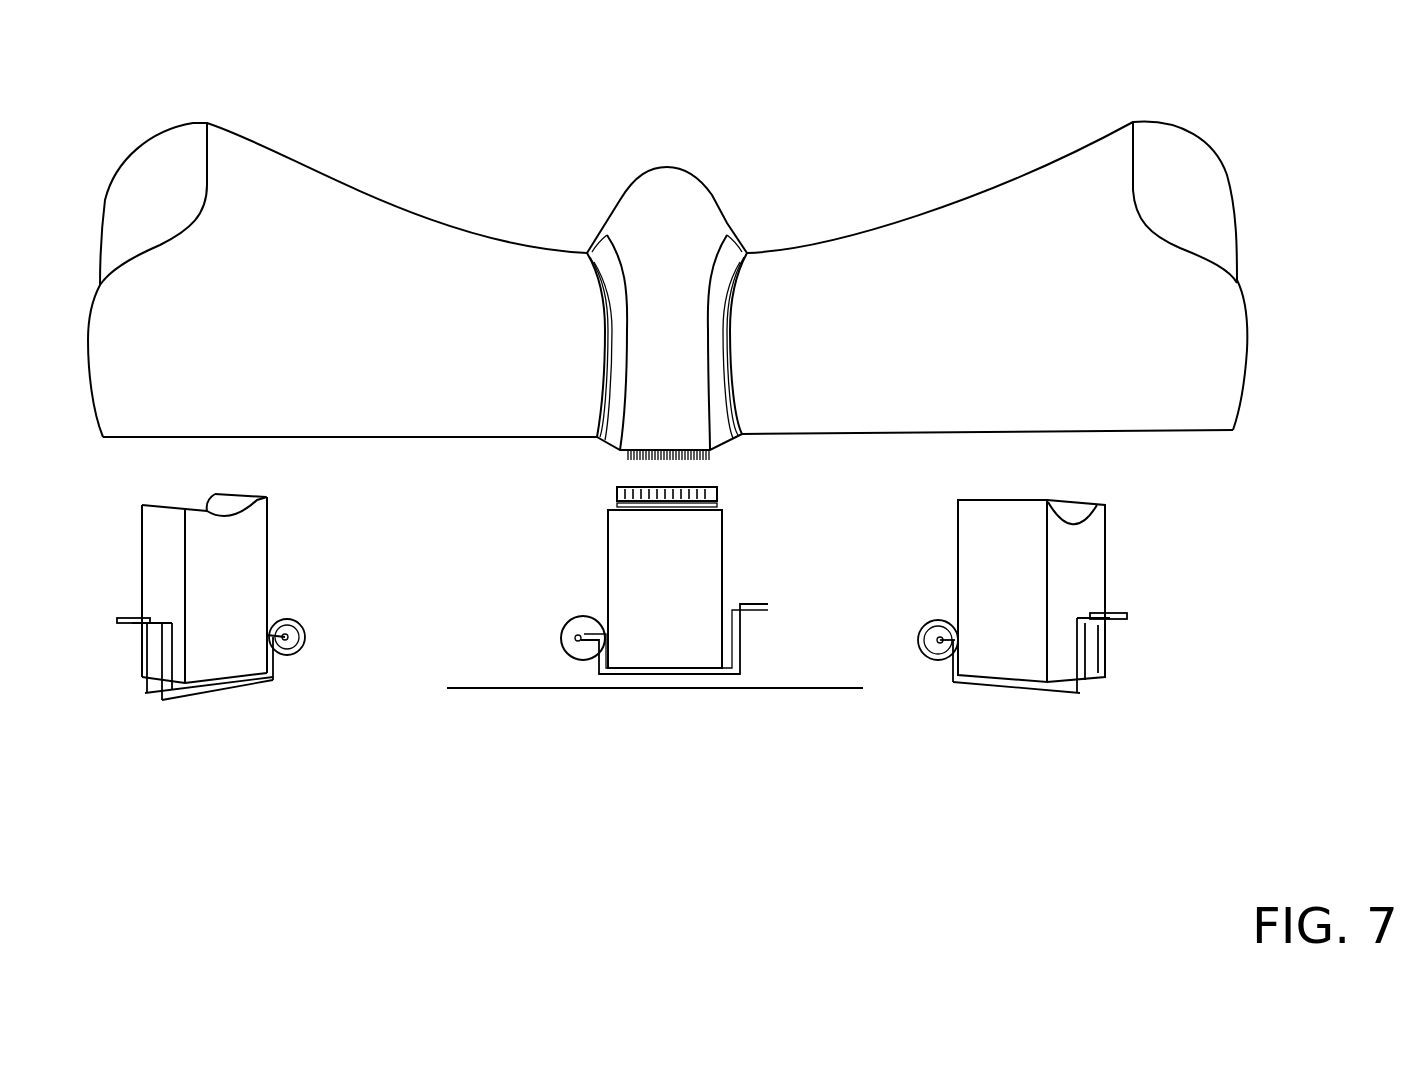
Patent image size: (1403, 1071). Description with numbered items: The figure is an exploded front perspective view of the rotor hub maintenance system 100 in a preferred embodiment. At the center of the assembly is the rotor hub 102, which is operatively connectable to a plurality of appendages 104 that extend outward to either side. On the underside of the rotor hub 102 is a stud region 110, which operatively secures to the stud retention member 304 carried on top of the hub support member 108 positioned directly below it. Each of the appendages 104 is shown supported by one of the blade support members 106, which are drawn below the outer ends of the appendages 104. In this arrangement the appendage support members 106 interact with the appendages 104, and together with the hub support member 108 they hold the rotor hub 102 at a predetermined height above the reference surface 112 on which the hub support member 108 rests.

The rotor hub maintenance system 100 is at (978, 866).
The rotor hub 102 is at (620, 200).
The appendages 104 is at (317, 168).
The blade support members 106 is at (255, 732).
The hub support member 108 is at (638, 715).
The stud region 110 is at (603, 464).
The reference surface 112 is at (815, 690).
The stud retention member 304 is at (739, 495).